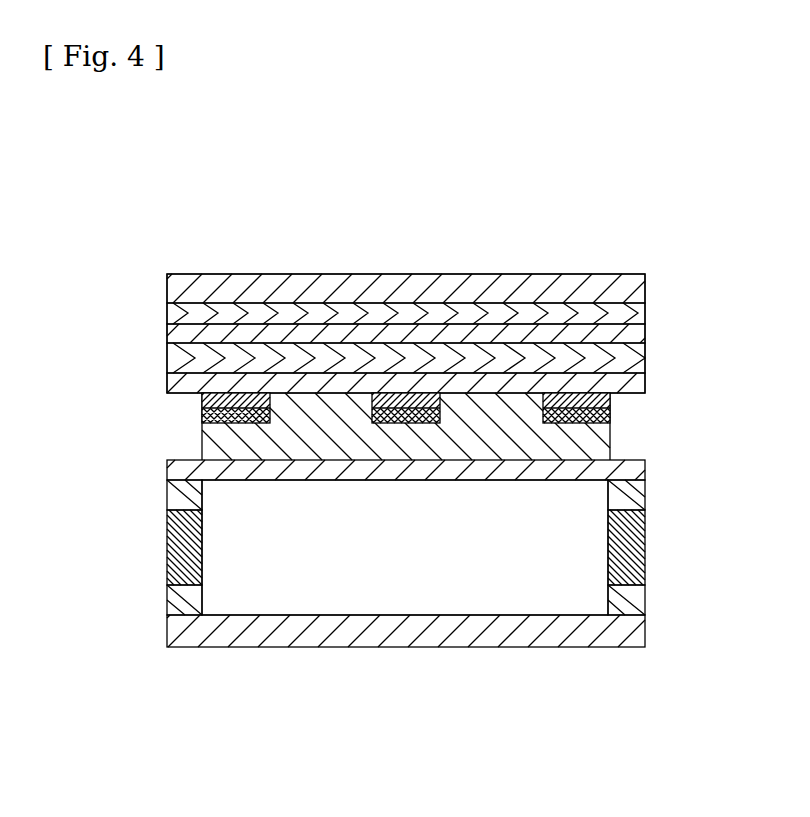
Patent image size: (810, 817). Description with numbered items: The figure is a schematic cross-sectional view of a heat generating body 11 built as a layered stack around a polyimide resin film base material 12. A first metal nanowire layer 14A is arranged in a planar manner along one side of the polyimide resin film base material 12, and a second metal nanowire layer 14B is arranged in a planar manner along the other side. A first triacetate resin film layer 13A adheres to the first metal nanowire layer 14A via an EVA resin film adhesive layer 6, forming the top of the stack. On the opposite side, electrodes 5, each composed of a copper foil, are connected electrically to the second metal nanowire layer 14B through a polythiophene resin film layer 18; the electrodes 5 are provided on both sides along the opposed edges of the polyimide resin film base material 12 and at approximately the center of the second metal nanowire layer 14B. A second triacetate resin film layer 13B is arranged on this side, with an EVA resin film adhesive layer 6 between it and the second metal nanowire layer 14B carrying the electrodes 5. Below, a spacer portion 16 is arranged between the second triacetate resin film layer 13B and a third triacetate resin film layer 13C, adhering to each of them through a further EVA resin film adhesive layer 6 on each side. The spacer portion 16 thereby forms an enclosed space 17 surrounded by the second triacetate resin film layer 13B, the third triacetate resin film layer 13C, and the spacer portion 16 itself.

The heat generating body 11 is at (653, 172).
The first triacetate resin film layer 13A is at (167, 276).
The EVA resin film adhesive layer 6 is at (645, 306).
The first metal nanowire layer 14A is at (167, 326).
The polyimide resin film base material 12 is at (645, 358).
The second metal nanowire layer 14B is at (167, 376).
The polythiophene resin film layer 18 is at (237, 400).
The electrodes 5 is at (236, 425).
The second triacetate resin film layer 13B is at (172, 461).
The spacer portion 16 is at (167, 535).
The enclosed space 17 is at (403, 568).
The third triacetate resin film layer 13C is at (318, 647).